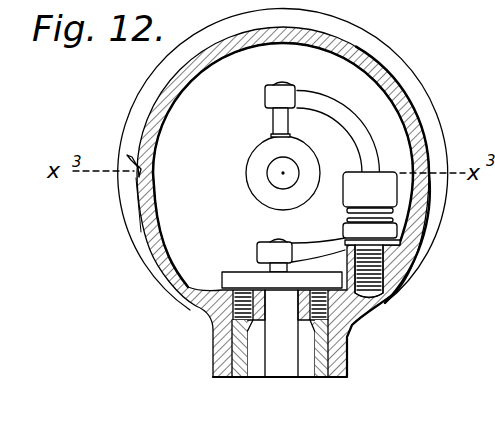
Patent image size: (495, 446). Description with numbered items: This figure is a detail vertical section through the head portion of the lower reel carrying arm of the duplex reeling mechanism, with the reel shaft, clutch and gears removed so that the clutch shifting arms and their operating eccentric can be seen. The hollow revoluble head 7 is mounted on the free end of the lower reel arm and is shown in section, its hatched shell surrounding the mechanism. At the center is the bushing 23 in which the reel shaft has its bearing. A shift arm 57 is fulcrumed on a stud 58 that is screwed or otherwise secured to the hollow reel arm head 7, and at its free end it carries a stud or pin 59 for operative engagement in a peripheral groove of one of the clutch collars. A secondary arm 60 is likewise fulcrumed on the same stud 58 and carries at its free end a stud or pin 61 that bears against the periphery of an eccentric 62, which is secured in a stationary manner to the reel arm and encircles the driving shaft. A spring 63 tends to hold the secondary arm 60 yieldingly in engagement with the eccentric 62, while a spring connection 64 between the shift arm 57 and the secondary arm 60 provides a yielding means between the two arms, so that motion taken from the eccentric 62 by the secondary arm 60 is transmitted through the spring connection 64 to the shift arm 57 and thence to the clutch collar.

The hollow revoluble head 7 is at (154, 118).
The bushing 23 is at (258, 183).
The shift arm 57 is at (350, 99).
The stud 58 is at (373, 278).
The stud or pin 59 is at (278, 121).
The secondary arm 60 is at (315, 252).
The stud or pin 61 is at (267, 268).
The eccentric 62 is at (235, 282).
The spring 63 is at (397, 244).
The spring connection 64 is at (397, 218).